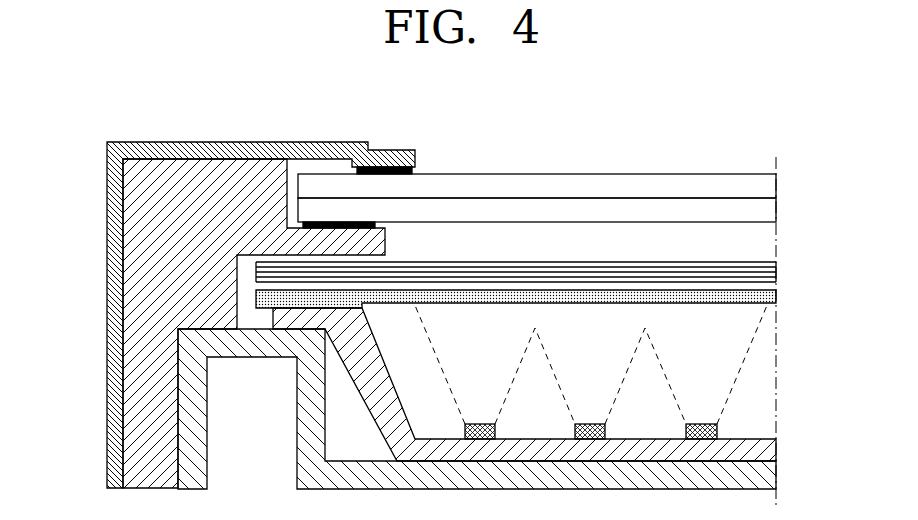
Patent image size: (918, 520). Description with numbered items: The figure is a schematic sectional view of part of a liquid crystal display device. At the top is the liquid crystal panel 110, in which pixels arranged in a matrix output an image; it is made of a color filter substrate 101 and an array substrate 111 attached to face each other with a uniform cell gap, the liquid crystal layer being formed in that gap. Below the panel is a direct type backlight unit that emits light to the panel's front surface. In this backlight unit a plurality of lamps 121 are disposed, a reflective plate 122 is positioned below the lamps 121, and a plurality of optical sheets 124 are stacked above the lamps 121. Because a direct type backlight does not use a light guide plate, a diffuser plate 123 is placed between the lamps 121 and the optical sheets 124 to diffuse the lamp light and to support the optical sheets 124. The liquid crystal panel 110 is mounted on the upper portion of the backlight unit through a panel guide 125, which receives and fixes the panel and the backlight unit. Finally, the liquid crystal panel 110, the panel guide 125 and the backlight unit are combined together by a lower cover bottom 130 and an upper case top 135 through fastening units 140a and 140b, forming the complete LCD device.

The color filter substrate 101 is at (773, 183).
The array substrate 111 is at (773, 212).
The liquid crystal panel 110 is at (591, 197).
The lamps 121 is at (717, 432).
The reflective plate 122 is at (773, 450).
The diffuser plate 123 is at (773, 296).
The optical sheets 124 is at (787, 255).
The panel guide 125 is at (130, 316).
The cover bottom 130 is at (773, 476).
The case top 135 is at (115, 231).
The fastening unit 140a is at (386, 167).
The fastening unit 140b is at (331, 222).